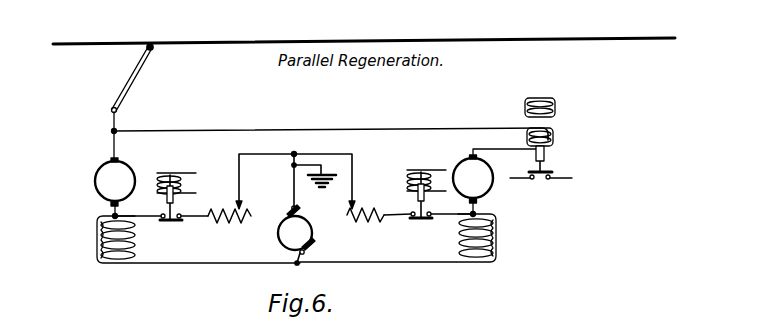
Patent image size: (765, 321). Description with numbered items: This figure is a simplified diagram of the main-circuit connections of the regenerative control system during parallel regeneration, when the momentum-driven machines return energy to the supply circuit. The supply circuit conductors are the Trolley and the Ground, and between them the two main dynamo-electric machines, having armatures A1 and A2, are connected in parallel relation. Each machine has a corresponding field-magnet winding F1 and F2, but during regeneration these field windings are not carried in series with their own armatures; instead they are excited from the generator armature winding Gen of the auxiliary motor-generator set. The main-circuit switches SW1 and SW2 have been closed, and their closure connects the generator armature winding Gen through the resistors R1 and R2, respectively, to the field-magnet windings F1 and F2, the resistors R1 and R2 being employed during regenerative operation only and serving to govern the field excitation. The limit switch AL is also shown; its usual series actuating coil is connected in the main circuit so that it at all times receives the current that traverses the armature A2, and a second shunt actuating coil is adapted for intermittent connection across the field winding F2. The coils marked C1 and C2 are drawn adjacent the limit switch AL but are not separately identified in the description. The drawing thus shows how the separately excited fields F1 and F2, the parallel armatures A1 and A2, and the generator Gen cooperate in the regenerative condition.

The trolley Trolley is at (190, 48).
The armature A1 is at (115, 182).
The armature A2 is at (473, 179).
The field-magnet winding F1 is at (100, 231).
The field-magnet winding F2 is at (497, 230).
The main-circuit switch SW1 is at (176, 207).
The main-circuit switch SW2 is at (422, 204).
The resistor R1 is at (226, 201).
The resistor R2 is at (363, 197).
The generator armature winding Gen is at (278, 236).
The ground Ground is at (328, 187).
The first contactor coil C1 is at (555, 137).
The second contactor coil C2 is at (556, 109).
The limit switch AL is at (545, 162).